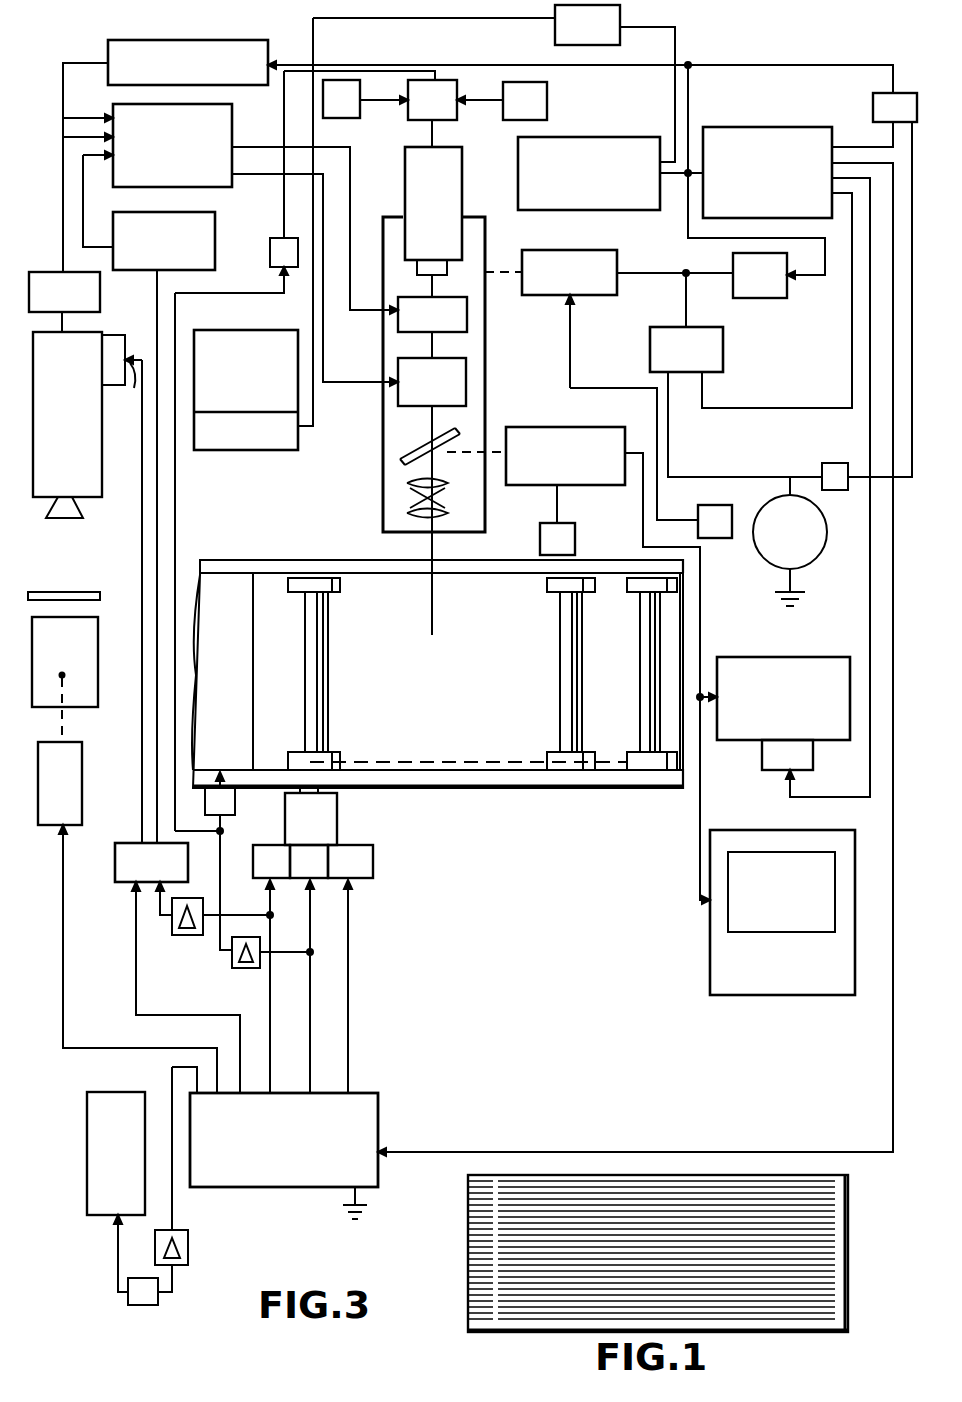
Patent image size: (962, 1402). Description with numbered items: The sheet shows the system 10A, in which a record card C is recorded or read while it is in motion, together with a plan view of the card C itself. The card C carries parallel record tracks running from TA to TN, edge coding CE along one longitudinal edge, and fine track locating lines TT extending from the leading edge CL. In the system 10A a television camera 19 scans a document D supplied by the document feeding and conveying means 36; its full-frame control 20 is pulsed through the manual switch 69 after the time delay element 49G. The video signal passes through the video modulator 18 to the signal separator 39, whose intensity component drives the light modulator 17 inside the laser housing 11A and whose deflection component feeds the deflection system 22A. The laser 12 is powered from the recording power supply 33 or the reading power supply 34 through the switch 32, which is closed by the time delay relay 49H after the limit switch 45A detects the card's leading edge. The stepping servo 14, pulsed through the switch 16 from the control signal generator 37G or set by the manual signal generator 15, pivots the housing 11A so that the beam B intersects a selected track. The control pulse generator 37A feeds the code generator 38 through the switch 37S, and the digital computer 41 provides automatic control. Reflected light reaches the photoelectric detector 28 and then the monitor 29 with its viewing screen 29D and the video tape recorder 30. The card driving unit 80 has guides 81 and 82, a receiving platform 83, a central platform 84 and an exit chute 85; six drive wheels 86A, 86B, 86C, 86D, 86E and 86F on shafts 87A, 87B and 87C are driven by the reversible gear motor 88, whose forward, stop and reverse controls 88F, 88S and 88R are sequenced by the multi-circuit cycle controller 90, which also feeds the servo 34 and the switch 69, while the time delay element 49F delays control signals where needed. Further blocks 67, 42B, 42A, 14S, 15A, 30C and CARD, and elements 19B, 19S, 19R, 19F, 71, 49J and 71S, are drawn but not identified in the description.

In FIG. 3, the system 10A is at (54, 57).
In FIG. 3, the code generator 38 is at (240, 42).
In FIG. 3, the signal separator 39 is at (240, 108).
In FIG. 3, the video signal generator 67 is at (210, 224).
In FIG. 3, the time delay relay 49H is at (276, 259).
In FIG. 3, the video modulator 18 is at (100, 297).
In FIG. 3, the television camera 19 is at (90, 468).
In FIG. 3, the projector connection 19B is at (123, 388).
In FIG. 3, the automatic frame deflection control signal generator 20 is at (115, 338).
In FIG. 3, the document D is at (84, 590).
In FIG. 3, the document feeding and conveying means 36 is at (94, 644).
In FIG. 3, the reading power supply 34 is at (80, 782).
In FIG. 3, the control unit 42B is at (618, 18).
In FIG. 3, the recording power supply 33 is at (348, 114).
In FIG. 3, the switch 32 is at (450, 112).
In FIG. 3, the laser 12 is at (462, 152).
In FIG. 3, the laser housing 11A is at (383, 442).
In FIG. 3, the light modulator 17 is at (468, 320).
In FIG. 3, the deflection system 22A is at (466, 380).
In FIG. 3, the video monitor 29 is at (400, 463).
In FIG. 3, the viewing screen 29D is at (745, 912).
In FIG. 3, the photoelectric detector 28 is at (545, 428).
In FIG. 3, the digital computer 41 is at (588, 137).
In FIG. 3, the stepping servo 14 is at (600, 251).
In FIG. 3, the control pulse generator 37A is at (712, 68).
In FIG. 3, the control signal generator 37G is at (766, 127).
In FIG. 3, the switch 37S is at (873, 106).
In FIG. 3, the switch 42A is at (738, 266).
In FIG. 3, the switch 16 is at (710, 338).
In FIG. 3, the servo sensor 14S is at (708, 513).
In FIG. 3, the sensor 15A is at (855, 443).
In FIG. 3, the manual signal generator 15 is at (808, 560).
In FIG. 3, the video tape recorder 30 is at (786, 658).
In FIG. 3, the recorder control 30C is at (792, 758).
In FIG. 3, the card random storage servo CARD is at (246, 390).
In FIG. 3, the card driving and positioning unit 80 is at (243, 558).
In FIG. 3, the side wall or guide 81 is at (279, 558).
In FIG. 3, the side wall or guide 82 is at (483, 788).
In FIG. 3, the receiving platform 83 is at (226, 695).
In FIG. 3, the central platform 84 is at (446, 695).
In FIG. 3, the exit platform or storage chute 85 is at (623, 695).
In FIG. 3, the laser beam B is at (440, 548).
In FIG. 3, the drive wheel 86A is at (338, 590).
In FIG. 3, the drive wheel 86B is at (335, 740).
In FIG. 3, the drive wheel 86C is at (556, 588).
In FIG. 3, the drive wheel 86D is at (556, 754).
In FIG. 3, the drive wheel 86E is at (641, 592).
In FIG. 3, the drive wheel 86F is at (640, 754).
In FIG. 3, the shaft 87A is at (328, 648).
In FIG. 3, the shaft 87B is at (565, 649).
In FIG. 3, the shaft 87C is at (646, 639).
In FIG. 3, the limit switch 45A is at (234, 807).
In FIG. 3, the reversible gear motor 88 is at (336, 827).
In FIG. 3, the forward drive control 88F is at (268, 880).
In FIG. 3, the stop control 88S is at (300, 885).
In FIG. 3, the reverse drive control 88R is at (362, 884).
In FIG. 3, the manual switch 69 is at (115, 867).
In FIG. 3, the time delay element 49G is at (190, 936).
In FIG. 3, the time delay element 49F is at (248, 969).
In FIG. 3, the stop line 19S is at (310, 972).
In FIG. 3, the reverse line 19R is at (348, 1000).
In FIG. 3, the forward line 19F is at (270, 1045).
In FIG. 3, the multi-circuit cycle controller 90 is at (362, 1102).
In FIG. 3, the card feeder 71 is at (87, 1153).
In FIG. 3, the delay element 49J is at (188, 1244).
In FIG. 3, the feeder switch 71S is at (158, 1300).
In FIG. 1, the record card C is at (470, 1216).
In FIG. 1, the edge coding CE is at (488, 1176).
In FIG. 1, the track locating lines TT is at (468, 1273).
In FIG. 1, the leading edge CL is at (468, 1306).
In FIG. 1, the record track TN is at (826, 1186).
In FIG. 1, the record track TA is at (830, 1326).